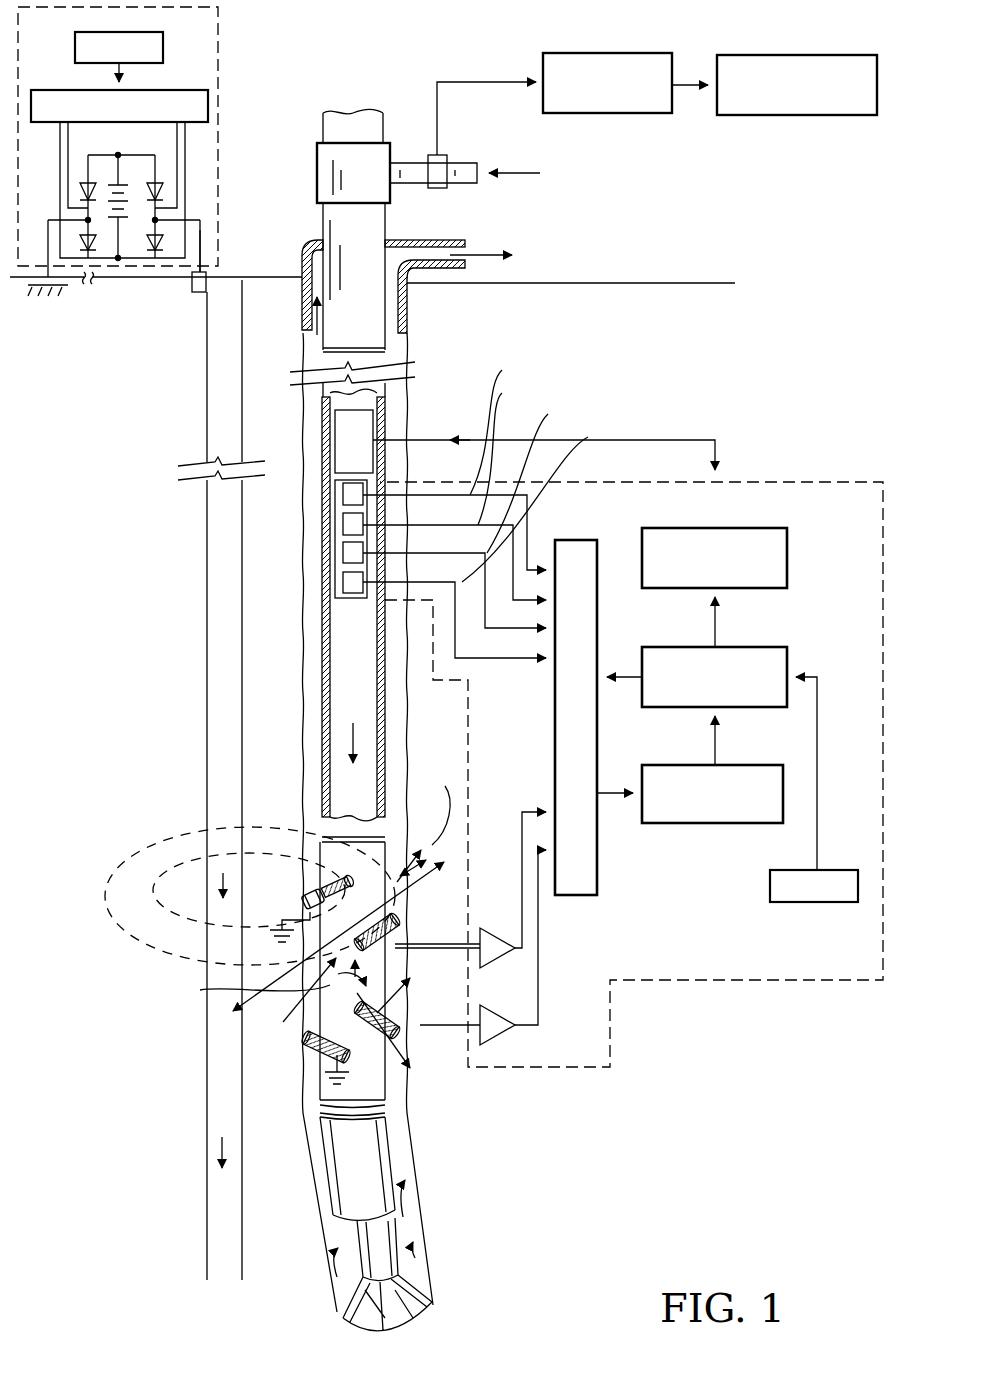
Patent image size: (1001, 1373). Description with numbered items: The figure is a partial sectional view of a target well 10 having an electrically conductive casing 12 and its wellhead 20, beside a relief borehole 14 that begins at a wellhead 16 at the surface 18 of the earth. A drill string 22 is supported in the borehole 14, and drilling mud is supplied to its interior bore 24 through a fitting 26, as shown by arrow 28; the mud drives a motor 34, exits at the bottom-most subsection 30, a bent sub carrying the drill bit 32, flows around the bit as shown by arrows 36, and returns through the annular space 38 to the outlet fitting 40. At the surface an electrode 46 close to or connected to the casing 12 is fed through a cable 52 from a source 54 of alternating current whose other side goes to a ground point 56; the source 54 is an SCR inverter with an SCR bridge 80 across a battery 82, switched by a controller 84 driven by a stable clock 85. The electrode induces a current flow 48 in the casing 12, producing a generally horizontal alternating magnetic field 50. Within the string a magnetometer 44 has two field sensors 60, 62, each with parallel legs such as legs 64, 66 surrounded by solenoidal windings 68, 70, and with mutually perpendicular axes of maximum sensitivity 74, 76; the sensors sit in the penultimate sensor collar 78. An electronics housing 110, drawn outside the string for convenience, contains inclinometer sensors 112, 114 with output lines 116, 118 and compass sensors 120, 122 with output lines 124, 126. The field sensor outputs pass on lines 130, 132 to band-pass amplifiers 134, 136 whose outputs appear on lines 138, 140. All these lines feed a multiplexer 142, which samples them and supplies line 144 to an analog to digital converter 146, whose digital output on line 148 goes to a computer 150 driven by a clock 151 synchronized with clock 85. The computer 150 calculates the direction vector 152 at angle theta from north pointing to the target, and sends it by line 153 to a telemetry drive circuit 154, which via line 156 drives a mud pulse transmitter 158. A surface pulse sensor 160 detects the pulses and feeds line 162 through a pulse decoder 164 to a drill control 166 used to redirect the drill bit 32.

The target well 10 is at (184, 710).
The casing 12 is at (208, 1108).
The relief borehole 14 is at (403, 331).
The wellhead 16 is at (293, 256).
The surface of the earth 18 is at (612, 283).
The wellhead of target well 20 is at (228, 272).
The drill string 22 is at (314, 680).
The interior bore 24 is at (328, 628).
The fitting 26 is at (318, 160).
The drilling mud flow 28 is at (500, 173).
The bottom-most drill string subsection 30 is at (333, 1195).
The drill bit 32 is at (357, 1330).
The motor 34 is at (357, 1232).
The mud outflow arrows 36 is at (312, 330).
The annular space 38 is at (302, 398).
The outlet fitting 40 is at (393, 242).
The magnetometer 44 is at (249, 988).
The electrode 46 is at (197, 292).
The current flow I 48 is at (213, 888).
The magnetic field 50 is at (152, 840).
The cable 52 is at (193, 278).
The source of alternating current 54 is at (234, 40).
The ground point 56 is at (30, 286).
The field sensor 60 is at (304, 888).
The field sensor 62 is at (308, 1058).
The leg 64 is at (347, 884).
The leg 66 is at (400, 920).
The solenoidal winding 68 is at (322, 882).
The solenoidal winding 70 is at (335, 948).
The axis of maximum sensitivity 74 is at (452, 866).
The axis of maximum sensitivity 76 is at (413, 1080).
The sensor collar 78 is at (330, 1080).
The SCR bridge 80 is at (142, 170).
The battery 82 is at (113, 183).
The controller 84 is at (197, 90).
The clock 85 is at (165, 42).
The electronics housing 110 is at (610, 1007).
The inclinometer sensor 112 is at (343, 494).
The inclinometer sensor 114 is at (343, 524).
The output line 116 is at (458, 493).
The output line 118 is at (465, 530).
The compass sensor 120 is at (343, 553).
The compass sensor 122 is at (343, 582).
The output line 124 is at (513, 600).
The output line 126 is at (485, 658).
The output line 130 is at (400, 945).
The output line 132 is at (420, 1022).
The band-pass amplifier 134 is at (490, 928).
The band-pass amplifier 136 is at (490, 1012).
The output line 138 is at (522, 810).
The output line 140 is at (538, 960).
The multiplexer 142 is at (598, 875).
The output line 144 is at (625, 765).
The analog to digital converter 146 is at (708, 823).
The line 148 is at (716, 745).
The computer 150 is at (660, 647).
The clock 151 is at (832, 870).
The vector 152 is at (247, 1020).
The line 153 is at (716, 630).
The telemetry drive circuit 154 is at (682, 528).
The line 156 is at (428, 442).
The mud pulse transmitter 158 is at (360, 425).
The pulse sensor 160 is at (432, 155).
The line 162 is at (487, 82).
The pulse decoder 164 is at (585, 53).
The drill control 166 is at (766, 55).